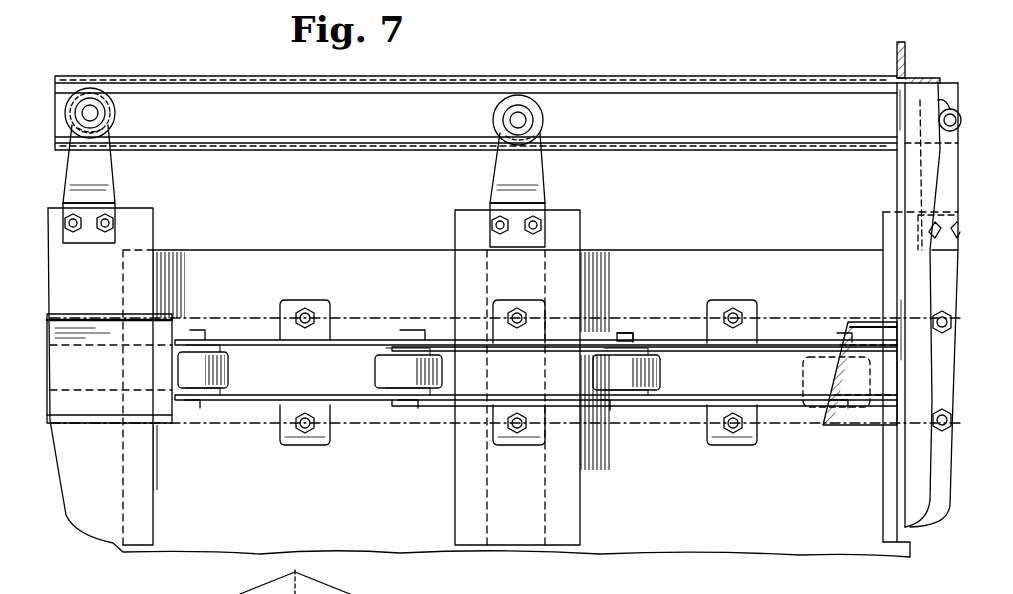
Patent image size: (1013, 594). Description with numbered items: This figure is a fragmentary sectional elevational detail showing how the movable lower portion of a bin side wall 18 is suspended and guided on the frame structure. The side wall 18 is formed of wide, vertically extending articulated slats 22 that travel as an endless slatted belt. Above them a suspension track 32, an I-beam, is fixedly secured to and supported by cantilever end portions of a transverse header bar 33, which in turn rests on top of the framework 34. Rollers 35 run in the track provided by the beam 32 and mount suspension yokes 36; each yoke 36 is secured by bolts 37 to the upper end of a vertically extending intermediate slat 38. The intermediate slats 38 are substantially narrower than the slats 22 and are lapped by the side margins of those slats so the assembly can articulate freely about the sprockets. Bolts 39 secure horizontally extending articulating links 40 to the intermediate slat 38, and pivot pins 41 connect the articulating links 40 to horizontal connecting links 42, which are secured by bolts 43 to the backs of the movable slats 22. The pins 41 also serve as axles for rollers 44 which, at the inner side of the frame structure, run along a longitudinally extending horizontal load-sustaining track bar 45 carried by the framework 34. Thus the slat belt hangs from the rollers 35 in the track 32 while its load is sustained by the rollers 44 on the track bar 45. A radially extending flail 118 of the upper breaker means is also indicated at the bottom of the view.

The side wall 18 is at (773, 570).
The articulated slat 22 is at (805, 252).
The suspension track 32 is at (375, 148).
The transverse header bar 33 is at (897, 56).
The framework 34 is at (897, 120).
The roller 35 is at (116, 113).
The suspension yoke 36 is at (118, 165).
The bolt 37 is at (105, 233).
The intermediate slat 38 is at (153, 260).
The bolt 39 is at (935, 322).
The articulating link 40 is at (195, 335).
The pivot pin 41 is at (625, 333).
The connecting link 42 is at (355, 341).
The bolt 43 is at (725, 310).
The roller 44 is at (660, 372).
The load-sustaining track bar 45 is at (112, 430).
The flail 118 is at (300, 576).